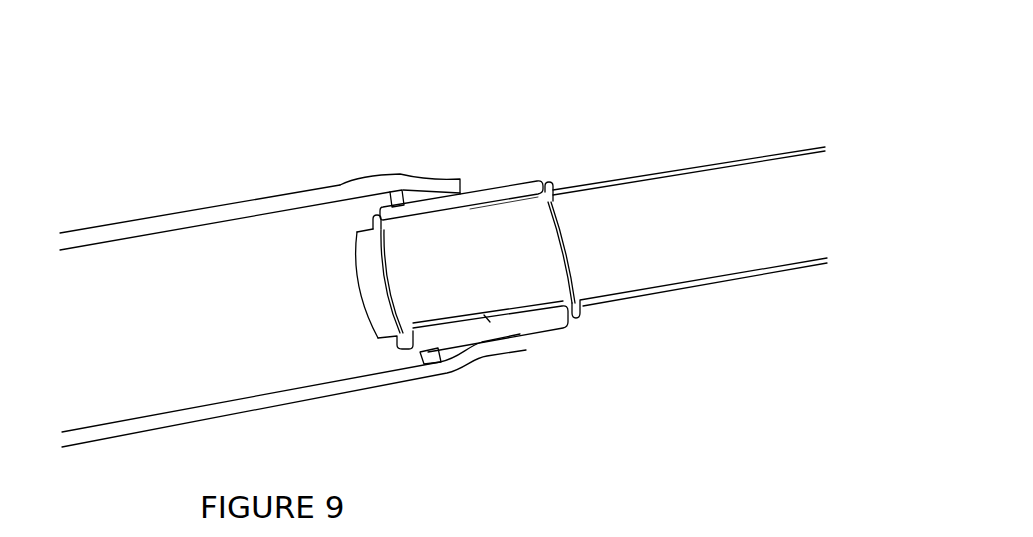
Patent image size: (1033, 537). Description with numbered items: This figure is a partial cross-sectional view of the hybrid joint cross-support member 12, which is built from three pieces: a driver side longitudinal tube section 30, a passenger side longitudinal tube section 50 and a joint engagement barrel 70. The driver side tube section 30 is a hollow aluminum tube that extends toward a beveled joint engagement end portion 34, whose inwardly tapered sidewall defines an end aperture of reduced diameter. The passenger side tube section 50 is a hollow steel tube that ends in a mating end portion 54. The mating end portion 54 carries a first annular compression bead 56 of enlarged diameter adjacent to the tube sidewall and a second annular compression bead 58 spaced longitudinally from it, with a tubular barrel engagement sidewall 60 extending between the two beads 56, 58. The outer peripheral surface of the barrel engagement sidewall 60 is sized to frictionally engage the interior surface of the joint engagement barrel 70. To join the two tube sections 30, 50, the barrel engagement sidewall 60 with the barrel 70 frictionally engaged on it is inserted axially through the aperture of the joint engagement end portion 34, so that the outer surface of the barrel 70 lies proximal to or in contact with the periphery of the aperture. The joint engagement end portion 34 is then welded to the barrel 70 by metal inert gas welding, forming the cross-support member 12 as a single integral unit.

The hybrid joint cross-support member 12 is at (590, 95).
The driver side longitudinal tube section 30 is at (142, 224).
The joint engagement end portion 34 is at (427, 184).
The passenger side longitudinal tube section 50 is at (712, 167).
The mating end portion 54 is at (442, 297).
The first annular compression bead 56 is at (549, 182).
The second annular compression bead 58 is at (376, 221).
The barrel engagement sidewall 60 is at (487, 320).
The joint engagement barrel 70 is at (535, 327).